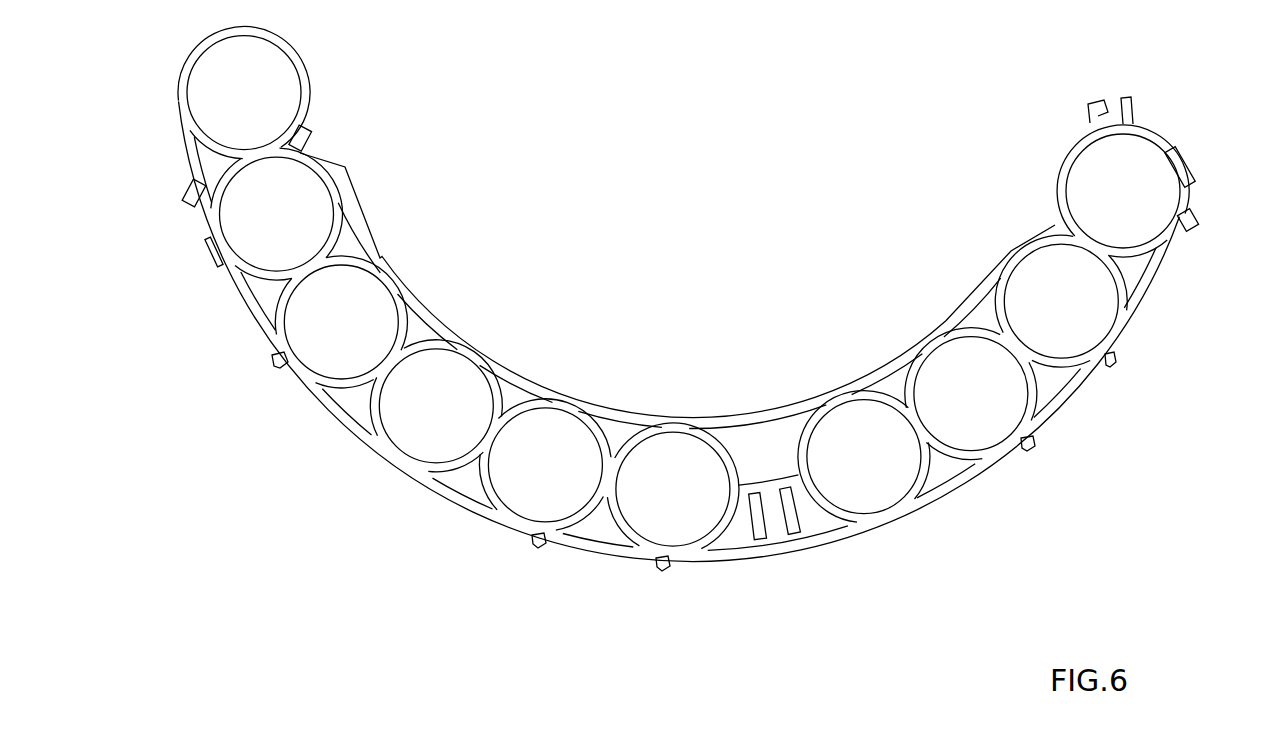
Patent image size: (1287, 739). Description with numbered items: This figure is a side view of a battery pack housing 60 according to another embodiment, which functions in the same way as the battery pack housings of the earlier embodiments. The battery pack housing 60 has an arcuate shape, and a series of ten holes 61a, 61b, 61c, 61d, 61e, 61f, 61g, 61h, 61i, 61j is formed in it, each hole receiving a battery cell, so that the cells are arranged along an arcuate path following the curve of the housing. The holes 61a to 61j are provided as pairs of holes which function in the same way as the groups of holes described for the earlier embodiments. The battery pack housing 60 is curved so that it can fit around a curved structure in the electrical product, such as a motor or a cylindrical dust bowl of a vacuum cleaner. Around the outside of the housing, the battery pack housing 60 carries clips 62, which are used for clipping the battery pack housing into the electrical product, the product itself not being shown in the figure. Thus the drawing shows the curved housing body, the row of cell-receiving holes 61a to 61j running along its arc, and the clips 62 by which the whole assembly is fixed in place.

The battery pack housing 60 is at (367, 233).
The hole 61a is at (215, 100).
The hole 61b is at (260, 232).
The hole 61c is at (328, 348).
The hole 61d is at (417, 437).
The hole 61e is at (532, 493).
The hole 61f is at (688, 510).
The hole 61g is at (873, 482).
The hole 61h is at (985, 425).
The hole 61i is at (1095, 315).
The hole 61j is at (1162, 178).
The clips 62 is at (273, 365).